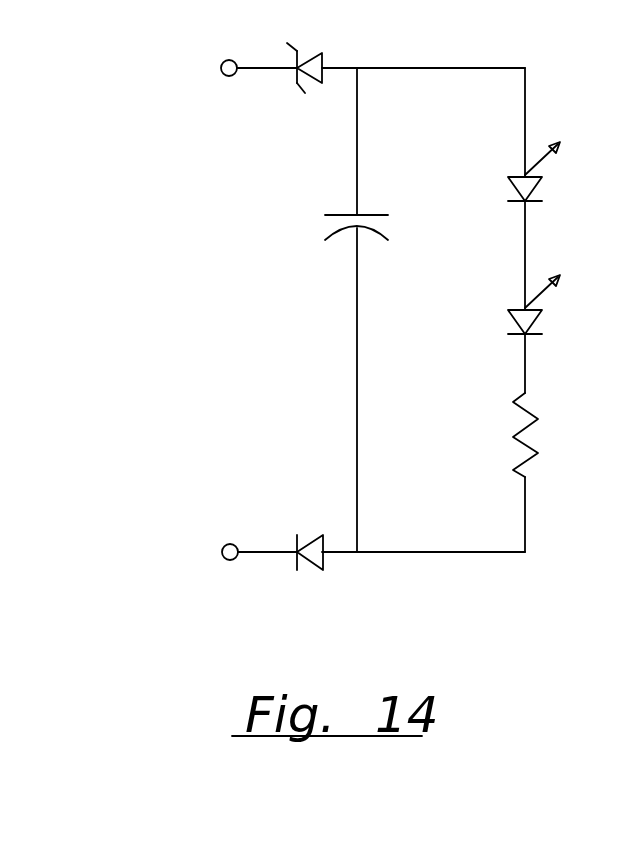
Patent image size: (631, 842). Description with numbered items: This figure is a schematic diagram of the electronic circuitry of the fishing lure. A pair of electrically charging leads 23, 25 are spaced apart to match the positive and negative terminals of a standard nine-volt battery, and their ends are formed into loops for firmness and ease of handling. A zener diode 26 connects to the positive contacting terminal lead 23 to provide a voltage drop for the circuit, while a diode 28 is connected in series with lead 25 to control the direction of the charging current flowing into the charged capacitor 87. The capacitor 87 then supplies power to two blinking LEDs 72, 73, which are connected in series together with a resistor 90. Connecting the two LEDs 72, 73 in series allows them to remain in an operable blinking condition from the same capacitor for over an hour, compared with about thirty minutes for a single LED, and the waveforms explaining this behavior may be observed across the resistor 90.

The electrically charging lead 23 is at (188, 46).
The electrically charging lead 25 is at (180, 523).
The zener diode 26 is at (309, 49).
The diode 28 is at (311, 579).
The charged capacitor 87 is at (390, 193).
The LED 72 is at (568, 185).
The LED 73 is at (567, 319).
The resistor 90 is at (566, 452).